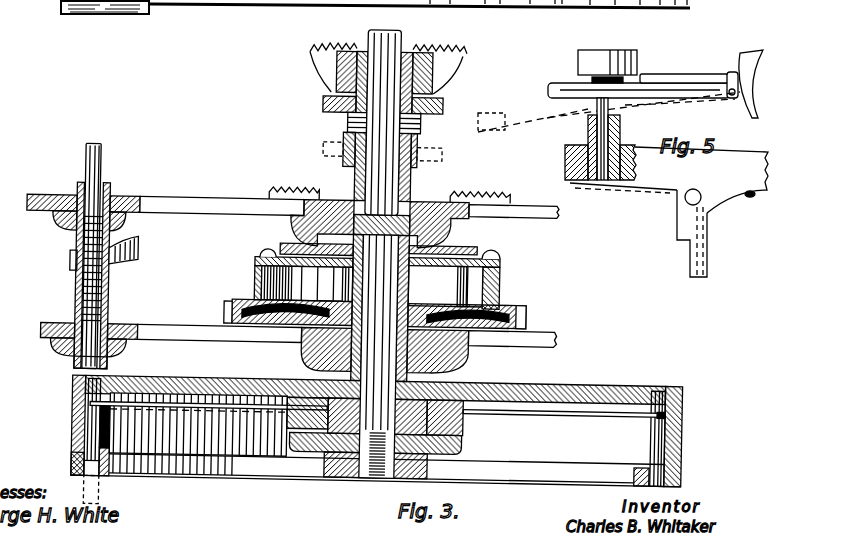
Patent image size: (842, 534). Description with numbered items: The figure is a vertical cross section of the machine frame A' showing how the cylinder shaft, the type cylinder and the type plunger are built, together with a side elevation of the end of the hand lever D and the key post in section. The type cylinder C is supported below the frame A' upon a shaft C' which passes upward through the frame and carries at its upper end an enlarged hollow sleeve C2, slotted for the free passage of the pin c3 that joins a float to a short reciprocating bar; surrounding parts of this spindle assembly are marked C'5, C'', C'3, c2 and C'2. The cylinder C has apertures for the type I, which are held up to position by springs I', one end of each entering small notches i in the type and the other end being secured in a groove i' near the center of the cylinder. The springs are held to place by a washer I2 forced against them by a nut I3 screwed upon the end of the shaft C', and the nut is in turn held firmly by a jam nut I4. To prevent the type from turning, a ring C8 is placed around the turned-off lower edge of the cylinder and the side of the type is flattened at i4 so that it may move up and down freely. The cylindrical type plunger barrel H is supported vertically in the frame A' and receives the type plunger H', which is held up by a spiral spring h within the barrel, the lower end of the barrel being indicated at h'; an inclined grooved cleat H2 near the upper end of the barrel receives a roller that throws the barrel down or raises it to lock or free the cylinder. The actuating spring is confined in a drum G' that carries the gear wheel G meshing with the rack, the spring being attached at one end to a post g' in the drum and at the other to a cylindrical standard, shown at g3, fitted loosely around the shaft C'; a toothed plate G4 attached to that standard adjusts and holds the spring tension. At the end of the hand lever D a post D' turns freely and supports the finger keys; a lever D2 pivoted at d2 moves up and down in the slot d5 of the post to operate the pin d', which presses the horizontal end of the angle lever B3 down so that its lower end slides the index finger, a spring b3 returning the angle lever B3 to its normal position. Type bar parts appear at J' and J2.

In FIG. 3, the type bar J' is at (105, 18).
In FIG. 3, the type bar rack J2 is at (160, 5).
In FIG. 3, the upper spindle C'5 is at (361, 119).
In FIG. 3, the gear wheel C'' is at (374, 68).
In FIG. 3, the sleeve C2 is at (335, 92).
In FIG. 3, the flange C'3 is at (367, 117).
In FIG. 3, the pin c3 is at (345, 123).
In FIG. 3, the lower collar block c2 is at (352, 162).
In FIG. 3, the sleeve C'2 is at (410, 127).
In FIG. 3, the frame A' is at (309, 274).
In FIG. 3, the type plunger H' is at (71, 256).
In FIG. 3, the spiral spring h is at (59, 251).
In FIG. 3, the inclined cleat H2 is at (138, 250).
In FIG. 3, the type-plunger barrel H is at (70, 274).
In FIG. 3, the column foot h' is at (73, 361).
In FIG. 3, the plate G4 is at (288, 245).
In FIG. 3, the drum G' is at (356, 277).
In FIG. 3, the post g' is at (357, 284).
In FIG. 3, the gear wheel G is at (359, 312).
In FIG. 3, the rod g3 is at (343, 284).
In FIG. 3, the shaft C' is at (346, 307).
In FIG. 3, the type cylinder C is at (377, 431).
In FIG. 3, the notches i is at (355, 416).
In FIG. 3, the type I is at (354, 432).
In FIG. 3, the flattened side of type i4 is at (88, 442).
In FIG. 3, the ring C8 is at (75, 470).
In FIG. 3, the springs I' is at (377, 416).
In FIG. 3, the washer I2 is at (290, 425).
In FIG. 3, the groove i' is at (292, 424).
In FIG. 3, the nut I3 is at (300, 455).
In FIG. 3, the jam nut I4 is at (350, 478).
In FIG. 5, the slot d5 is at (597, 100).
In FIG. 5, the lever D2 is at (609, 102).
In FIG. 5, the post D' is at (598, 147).
In FIG. 5, the pin d' is at (619, 139).
In FIG. 5, the pivot d2 is at (740, 98).
In FIG. 5, the hand lever D is at (669, 180).
In FIG. 5, the angle lever B3 is at (690, 215).
In FIG. 5, the spring b3 is at (746, 195).